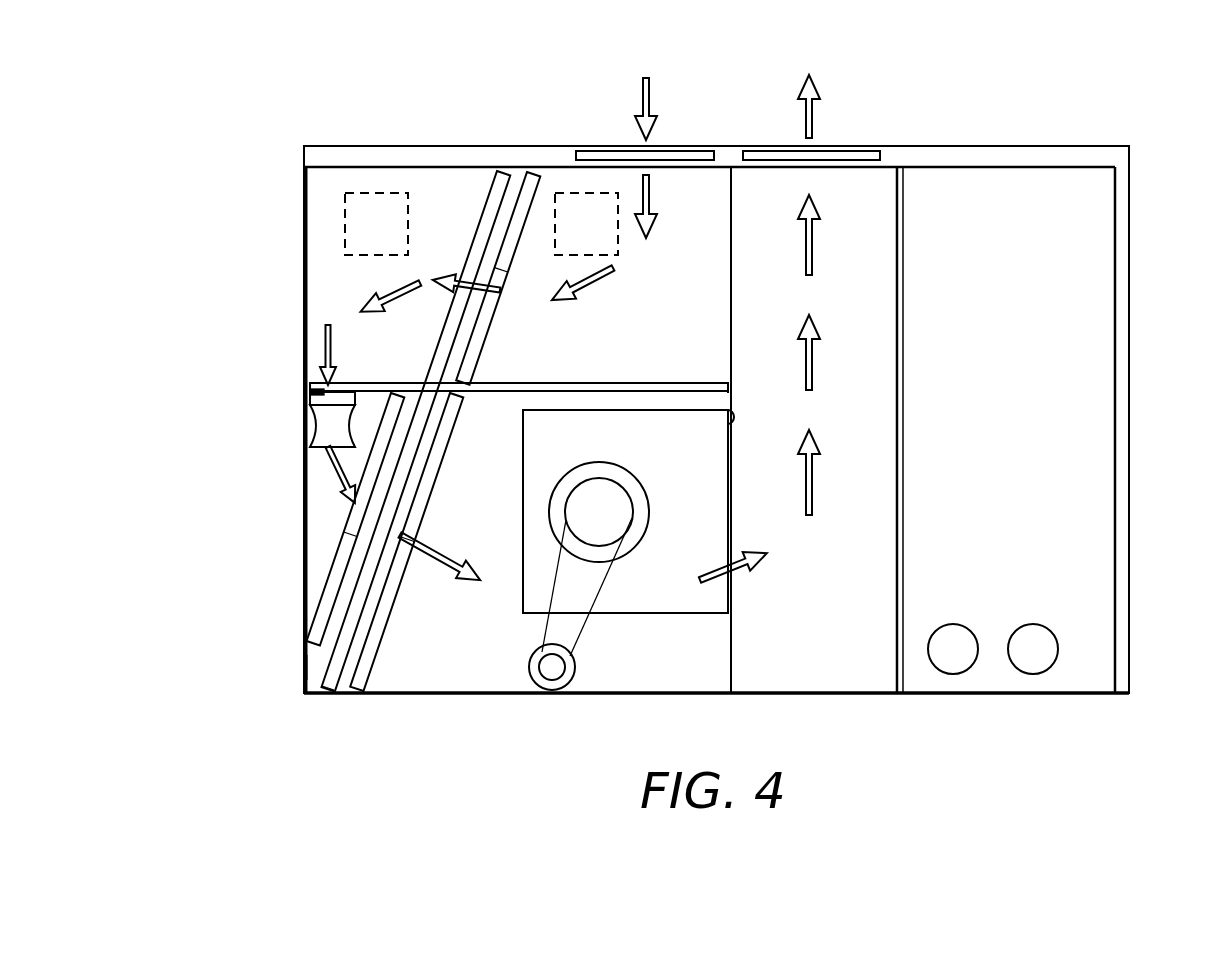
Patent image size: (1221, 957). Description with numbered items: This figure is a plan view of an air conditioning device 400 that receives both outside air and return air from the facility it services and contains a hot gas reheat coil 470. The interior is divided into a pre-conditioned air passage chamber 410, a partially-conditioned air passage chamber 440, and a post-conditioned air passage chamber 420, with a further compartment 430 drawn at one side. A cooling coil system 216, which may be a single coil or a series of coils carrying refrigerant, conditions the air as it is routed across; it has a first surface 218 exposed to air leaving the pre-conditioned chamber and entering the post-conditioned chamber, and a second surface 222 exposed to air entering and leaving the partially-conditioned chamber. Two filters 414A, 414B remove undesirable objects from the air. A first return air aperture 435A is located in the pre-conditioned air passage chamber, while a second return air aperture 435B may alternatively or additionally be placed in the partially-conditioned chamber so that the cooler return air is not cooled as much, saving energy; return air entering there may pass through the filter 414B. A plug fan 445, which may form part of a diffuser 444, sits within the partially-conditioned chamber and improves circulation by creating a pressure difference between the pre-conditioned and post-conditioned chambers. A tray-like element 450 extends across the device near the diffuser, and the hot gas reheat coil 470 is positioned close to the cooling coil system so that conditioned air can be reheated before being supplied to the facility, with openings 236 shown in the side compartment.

The air conditioning device 400 is at (250, 122).
The cooling coil system 216 is at (503, 178).
The filter 414A is at (534, 172).
The filter 414B is at (337, 570).
The first return air aperture 435A is at (582, 222).
The second return air aperture 435B is at (368, 228).
The pre-conditioned air passage chamber 410 is at (690, 304).
The partially-conditioned air passage chamber 440 is at (398, 344).
The post-conditioned air passage chamber 420 is at (493, 649).
The side compartment 430 is at (1082, 425).
The diffuser 444 is at (310, 388).
The plug fan 445 is at (338, 433).
The tray 450 is at (722, 380).
The hot gas reheat coil 470 is at (360, 672).
The second surface 222 is at (316, 668).
The first surface 218 is at (339, 678).
The vents 236 is at (1033, 653).